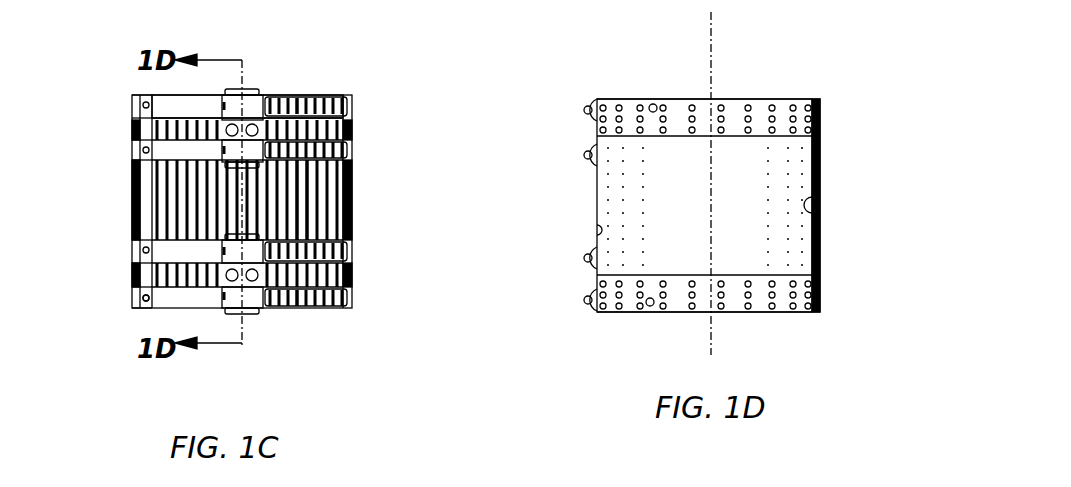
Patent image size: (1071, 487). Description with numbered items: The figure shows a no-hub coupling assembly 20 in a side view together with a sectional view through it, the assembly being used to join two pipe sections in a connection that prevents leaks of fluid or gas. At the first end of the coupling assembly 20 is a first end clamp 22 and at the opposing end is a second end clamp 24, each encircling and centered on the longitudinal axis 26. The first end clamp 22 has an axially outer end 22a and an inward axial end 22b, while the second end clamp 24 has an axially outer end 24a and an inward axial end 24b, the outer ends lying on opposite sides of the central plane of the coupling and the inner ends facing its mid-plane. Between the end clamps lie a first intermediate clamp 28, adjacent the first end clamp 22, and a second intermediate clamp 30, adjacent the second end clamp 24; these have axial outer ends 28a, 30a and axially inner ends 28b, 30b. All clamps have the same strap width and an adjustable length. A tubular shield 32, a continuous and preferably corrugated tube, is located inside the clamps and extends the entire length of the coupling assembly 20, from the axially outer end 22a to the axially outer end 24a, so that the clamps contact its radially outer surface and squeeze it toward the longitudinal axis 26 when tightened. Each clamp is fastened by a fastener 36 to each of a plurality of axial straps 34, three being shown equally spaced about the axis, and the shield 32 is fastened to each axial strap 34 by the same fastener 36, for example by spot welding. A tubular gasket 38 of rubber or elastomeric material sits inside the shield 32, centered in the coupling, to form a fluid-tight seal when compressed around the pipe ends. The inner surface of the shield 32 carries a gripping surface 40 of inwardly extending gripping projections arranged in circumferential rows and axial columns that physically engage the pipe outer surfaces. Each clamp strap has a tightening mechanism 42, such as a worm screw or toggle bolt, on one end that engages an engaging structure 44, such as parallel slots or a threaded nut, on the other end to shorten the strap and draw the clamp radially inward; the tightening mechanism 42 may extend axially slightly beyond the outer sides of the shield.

In FIG. 1C, the no-hub coupling assembly 20 is at (369, 46).
In FIG. 1D, the no-hub coupling assembly 20 is at (623, 33).
In FIG. 1C, the first end clamp 22 is at (352, 105).
In FIG. 1C, the axially outer end of first end clamp 22a is at (132, 95).
In FIG. 1C, the inward axial end of first end clamp 22b is at (133, 118).
In FIG. 1C, the second end clamp 24 is at (352, 148).
In FIG. 1C, the axially outer end of second end clamp 24a is at (133, 138).
In FIG. 1C, the inward axial end of second end clamp 24b is at (133, 152).
In FIG. 1D, the longitudinal axis 26 is at (720, 24).
In FIG. 1C, the first intermediate clamp 28 is at (352, 252).
In FIG. 1C, the axial outer end of first intermediate clamp 28a is at (132, 262).
In FIG. 1C, the axially inner end of first intermediate clamp 28b is at (132, 240).
In FIG. 1C, the second intermediate clamp 30 is at (352, 300).
In FIG. 1C, the axial outer end of second intermediate clamp 30a is at (133, 306).
In FIG. 1C, the axially inner end of second intermediate clamp 30b is at (132, 282).
In FIG. 1C, the tubular shield 32 is at (305, 220).
In FIG. 1D, the tubular shield 32 is at (787, 98).
In FIG. 1C, the axial strap 34 is at (142, 210).
In FIG. 1C, the fastener 36 is at (140, 310).
In FIG. 1D, the fastener 36 is at (653, 108).
In FIG. 1D, the tubular gasket 38 is at (597, 236).
In FIG. 1D, the gripping surface 40 is at (778, 108).
In FIG. 1C, the tightening mechanism 42 is at (255, 88).
In FIG. 1D, the tightening mechanism 42 is at (576, 112).
In FIG. 1C, the engaging structure 44 is at (300, 97).